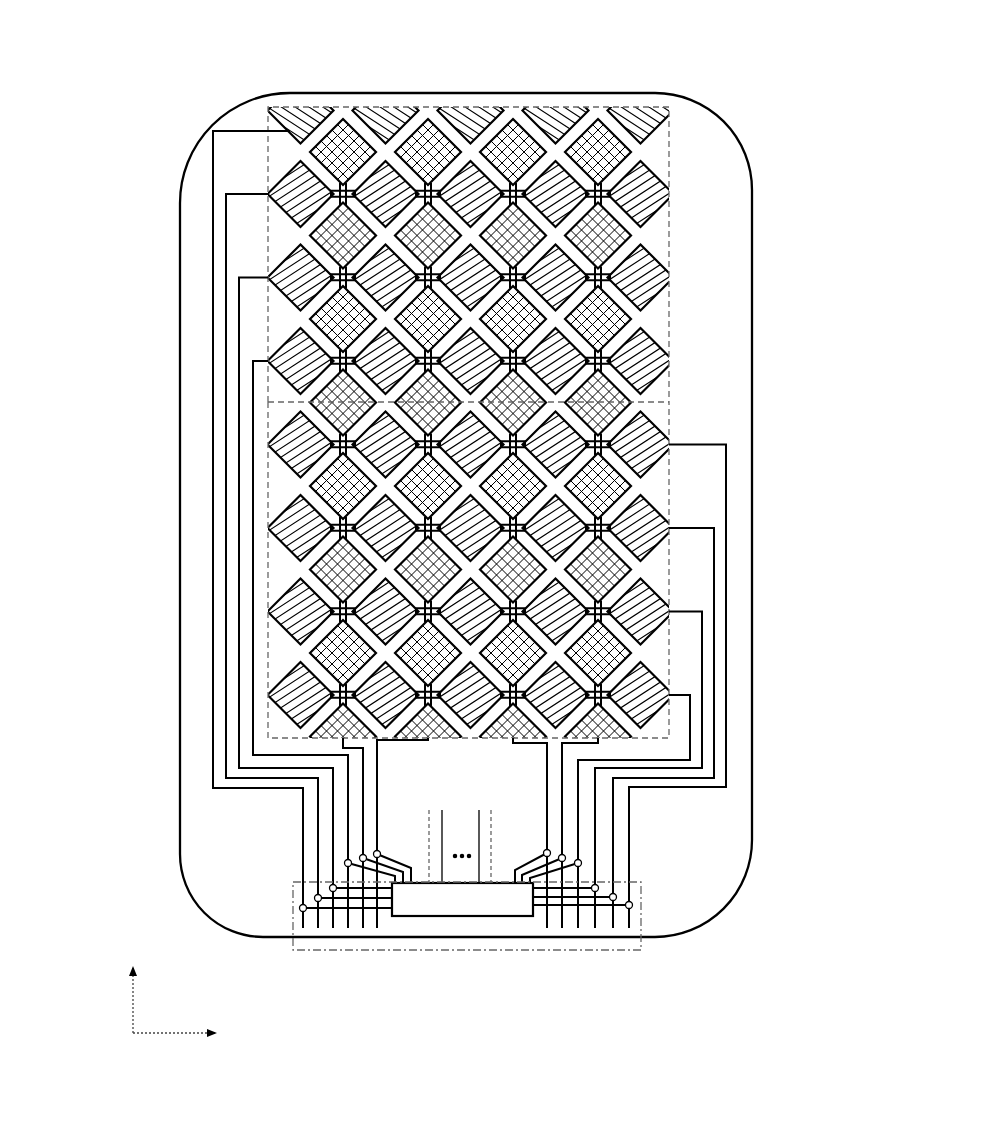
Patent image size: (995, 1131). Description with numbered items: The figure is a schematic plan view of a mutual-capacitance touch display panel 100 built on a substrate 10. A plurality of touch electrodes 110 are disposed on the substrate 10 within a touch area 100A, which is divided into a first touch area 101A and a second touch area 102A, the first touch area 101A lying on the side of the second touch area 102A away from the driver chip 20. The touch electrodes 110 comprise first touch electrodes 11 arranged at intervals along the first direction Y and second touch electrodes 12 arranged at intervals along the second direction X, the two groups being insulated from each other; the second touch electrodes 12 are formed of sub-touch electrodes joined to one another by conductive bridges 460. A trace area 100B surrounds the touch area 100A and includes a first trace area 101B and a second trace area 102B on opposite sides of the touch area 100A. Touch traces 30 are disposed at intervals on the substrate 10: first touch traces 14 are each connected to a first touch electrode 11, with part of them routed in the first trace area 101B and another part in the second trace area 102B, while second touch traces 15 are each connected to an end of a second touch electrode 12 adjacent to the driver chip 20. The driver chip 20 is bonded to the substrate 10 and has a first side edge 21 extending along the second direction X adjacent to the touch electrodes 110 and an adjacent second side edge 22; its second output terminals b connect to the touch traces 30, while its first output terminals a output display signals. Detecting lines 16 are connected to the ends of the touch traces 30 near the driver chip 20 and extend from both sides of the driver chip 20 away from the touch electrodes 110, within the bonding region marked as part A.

The touch display panel 100 is at (227, 58).
The substrate 10 is at (658, 92).
The touch electrodes 110 is at (563, 414).
The first touch electrodes 11 is at (657, 120).
The second touch electrodes 12 is at (627, 150).
The conductive bridges 460 is at (600, 196).
The touch area 100A is at (352, 422).
The first touch area 101A is at (262, 329).
The second touch area 102A is at (262, 431).
The trace area 100B is at (462, 529).
The first trace area 101B is at (251, 529).
The second trace area 102B is at (672, 587).
The touch traces 30 is at (462, 529).
The first touch traces 14 is at (213, 513).
The second touch traces 15 is at (562, 802).
The detecting lines 16 is at (632, 907).
The driver chip 20 is at (532, 912).
The first side edge 21 is at (423, 879).
The second side edge 22 is at (386, 921).
The part A is at (625, 958).